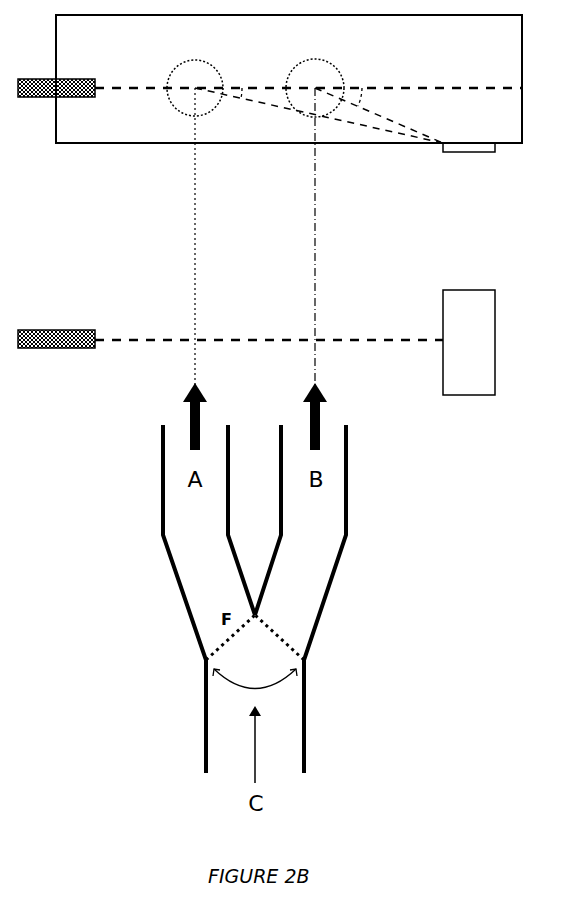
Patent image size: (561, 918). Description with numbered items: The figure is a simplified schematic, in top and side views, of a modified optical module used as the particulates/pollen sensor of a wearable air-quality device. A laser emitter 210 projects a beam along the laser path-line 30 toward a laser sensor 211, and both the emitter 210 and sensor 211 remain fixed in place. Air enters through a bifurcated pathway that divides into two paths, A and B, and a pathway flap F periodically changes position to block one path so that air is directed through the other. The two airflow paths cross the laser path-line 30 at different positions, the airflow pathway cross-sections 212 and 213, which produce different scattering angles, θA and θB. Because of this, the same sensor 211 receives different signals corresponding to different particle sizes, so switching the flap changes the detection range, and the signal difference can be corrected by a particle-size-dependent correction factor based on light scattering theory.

The laser path-line 30 is at (308, 204).
The laser emitter 210 is at (50, 198).
The laser sensor 211 is at (470, 269).
The airflow pathway cross-section 212 is at (305, 205).
The airflow pathway cross-section 213 is at (364, 205).